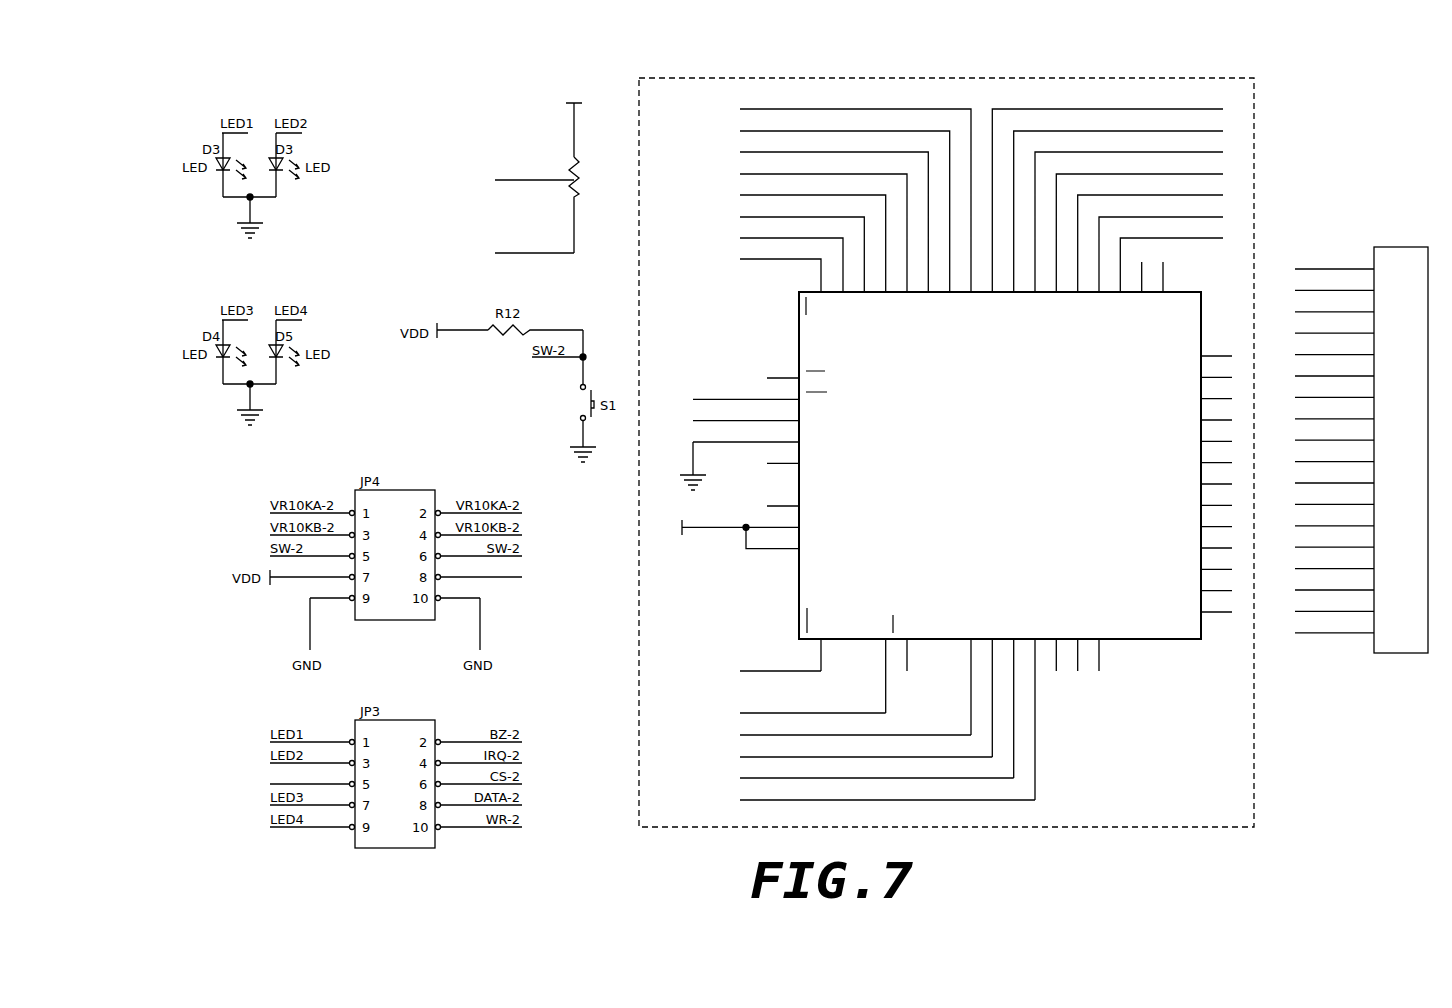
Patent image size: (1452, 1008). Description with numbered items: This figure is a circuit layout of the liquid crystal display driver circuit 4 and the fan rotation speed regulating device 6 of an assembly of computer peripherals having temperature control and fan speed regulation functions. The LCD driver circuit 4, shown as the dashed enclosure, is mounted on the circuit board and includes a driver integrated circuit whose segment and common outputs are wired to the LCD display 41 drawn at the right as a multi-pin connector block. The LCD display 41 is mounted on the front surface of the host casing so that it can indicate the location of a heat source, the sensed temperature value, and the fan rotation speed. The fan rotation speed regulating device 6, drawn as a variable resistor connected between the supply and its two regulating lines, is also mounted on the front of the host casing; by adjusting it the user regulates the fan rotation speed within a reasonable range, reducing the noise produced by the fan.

The LCD driver circuit 4 is at (1240, 736).
The fan rotation speed regulating device 6 is at (571, 158).
The LCD display 41 is at (1407, 268).